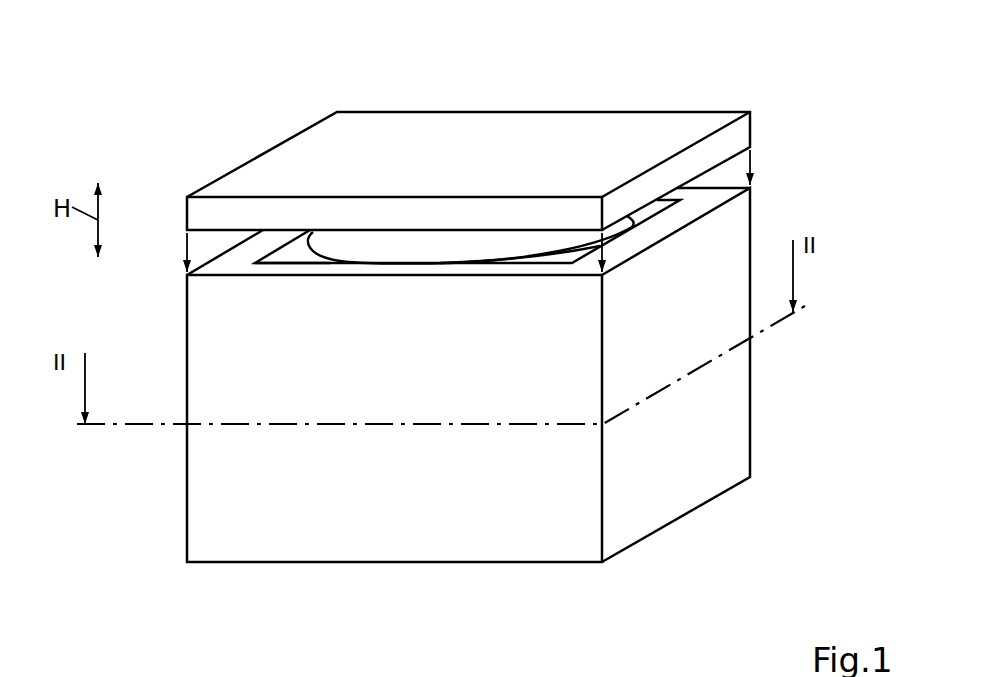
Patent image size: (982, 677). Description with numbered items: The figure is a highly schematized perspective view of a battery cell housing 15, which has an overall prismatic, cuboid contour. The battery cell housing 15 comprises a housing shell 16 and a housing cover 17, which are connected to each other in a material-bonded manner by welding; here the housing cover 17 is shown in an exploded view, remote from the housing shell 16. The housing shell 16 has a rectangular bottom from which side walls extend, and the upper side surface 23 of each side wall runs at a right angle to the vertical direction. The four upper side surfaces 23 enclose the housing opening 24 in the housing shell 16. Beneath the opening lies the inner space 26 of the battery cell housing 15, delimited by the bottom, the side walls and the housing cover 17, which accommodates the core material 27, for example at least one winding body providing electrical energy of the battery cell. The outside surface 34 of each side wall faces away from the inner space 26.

The battery cell housing 15 is at (443, 335).
The housing shell 16 is at (443, 394).
The housing cover 17 is at (210, 150).
The upper side surface 23 is at (267, 240).
The housing opening 24 is at (312, 262).
The inner space 26 is at (288, 257).
The core material 27 is at (457, 243).
The outside surface 34 is at (343, 492).